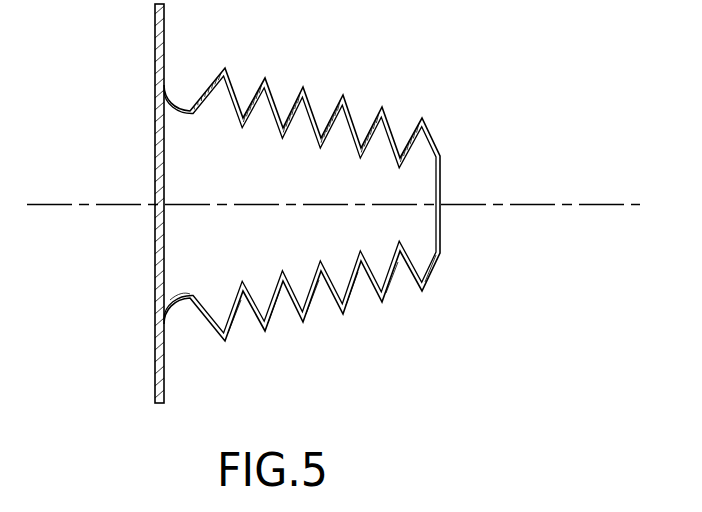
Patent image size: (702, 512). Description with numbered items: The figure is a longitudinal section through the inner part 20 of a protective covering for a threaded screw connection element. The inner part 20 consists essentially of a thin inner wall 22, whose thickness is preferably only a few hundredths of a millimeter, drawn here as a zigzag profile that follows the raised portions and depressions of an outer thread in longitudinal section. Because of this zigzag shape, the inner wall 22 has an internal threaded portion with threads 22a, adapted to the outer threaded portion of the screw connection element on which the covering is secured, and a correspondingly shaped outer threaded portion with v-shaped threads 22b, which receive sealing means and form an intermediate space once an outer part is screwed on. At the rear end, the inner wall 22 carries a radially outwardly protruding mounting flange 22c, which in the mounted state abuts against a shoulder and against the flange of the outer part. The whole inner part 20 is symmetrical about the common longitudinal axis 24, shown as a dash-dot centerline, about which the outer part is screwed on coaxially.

The inner part 20 is at (403, 114).
The inner wall 22 is at (311, 103).
The threads of the internal inner threaded portion 22a is at (270, 277).
The threads of the outer threaded portion 22b is at (362, 268).
The mounting flange 22c is at (158, 351).
The longitudinal axis 24 is at (522, 203).